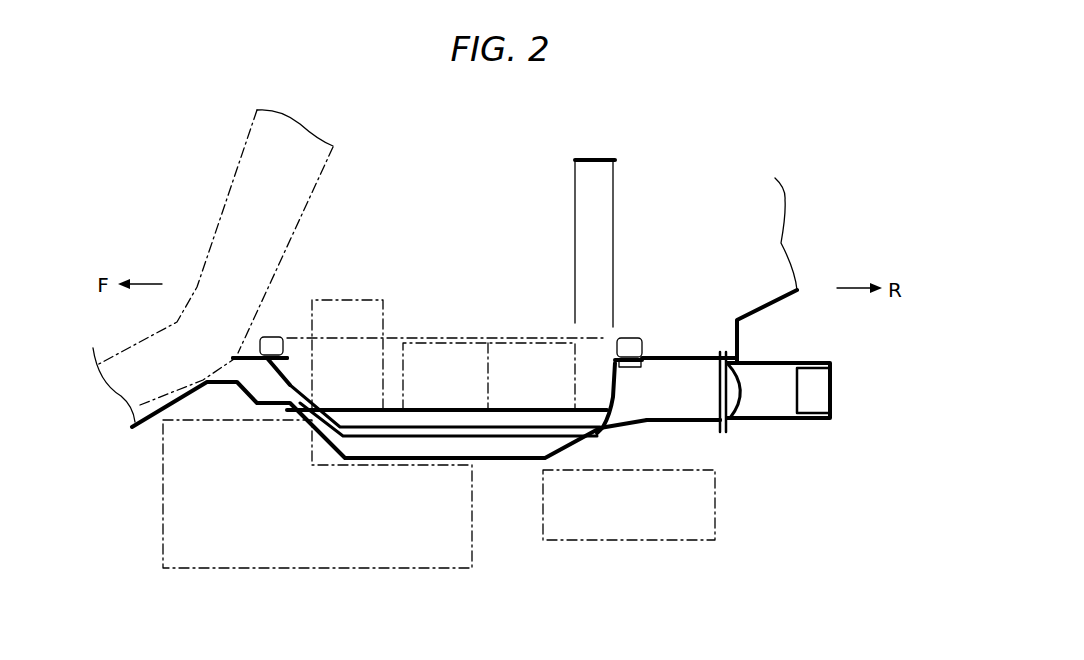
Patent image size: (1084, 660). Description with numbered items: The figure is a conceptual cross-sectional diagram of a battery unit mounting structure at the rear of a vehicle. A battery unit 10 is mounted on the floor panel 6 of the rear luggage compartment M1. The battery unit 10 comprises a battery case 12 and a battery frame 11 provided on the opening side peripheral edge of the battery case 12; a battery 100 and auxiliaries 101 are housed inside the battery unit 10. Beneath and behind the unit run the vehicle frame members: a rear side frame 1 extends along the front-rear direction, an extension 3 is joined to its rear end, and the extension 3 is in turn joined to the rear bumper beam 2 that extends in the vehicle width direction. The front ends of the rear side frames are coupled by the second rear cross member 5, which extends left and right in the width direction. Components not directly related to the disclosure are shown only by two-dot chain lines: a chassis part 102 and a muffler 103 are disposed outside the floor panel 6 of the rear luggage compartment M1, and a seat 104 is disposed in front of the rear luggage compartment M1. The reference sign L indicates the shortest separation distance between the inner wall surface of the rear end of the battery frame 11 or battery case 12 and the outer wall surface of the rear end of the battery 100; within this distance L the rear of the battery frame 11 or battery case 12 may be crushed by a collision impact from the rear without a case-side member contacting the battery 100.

The rear side frame 1 is at (673, 402).
The rear bumper beam 2 is at (818, 403).
The extension 3 is at (765, 405).
The second rear cross member 5 is at (257, 380).
The floor panel 6 is at (492, 463).
The battery unit 10 is at (543, 292).
The battery frame 11 is at (640, 300).
The battery case 12 is at (610, 393).
The battery 100 is at (513, 357).
The auxiliaries 101 is at (372, 300).
The chassis part 102 is at (170, 547).
The muffler 103 is at (663, 525).
The seat 104 is at (237, 203).
The rear luggage compartment M1 is at (458, 210).
The shortest separation distance L is at (597, 162).